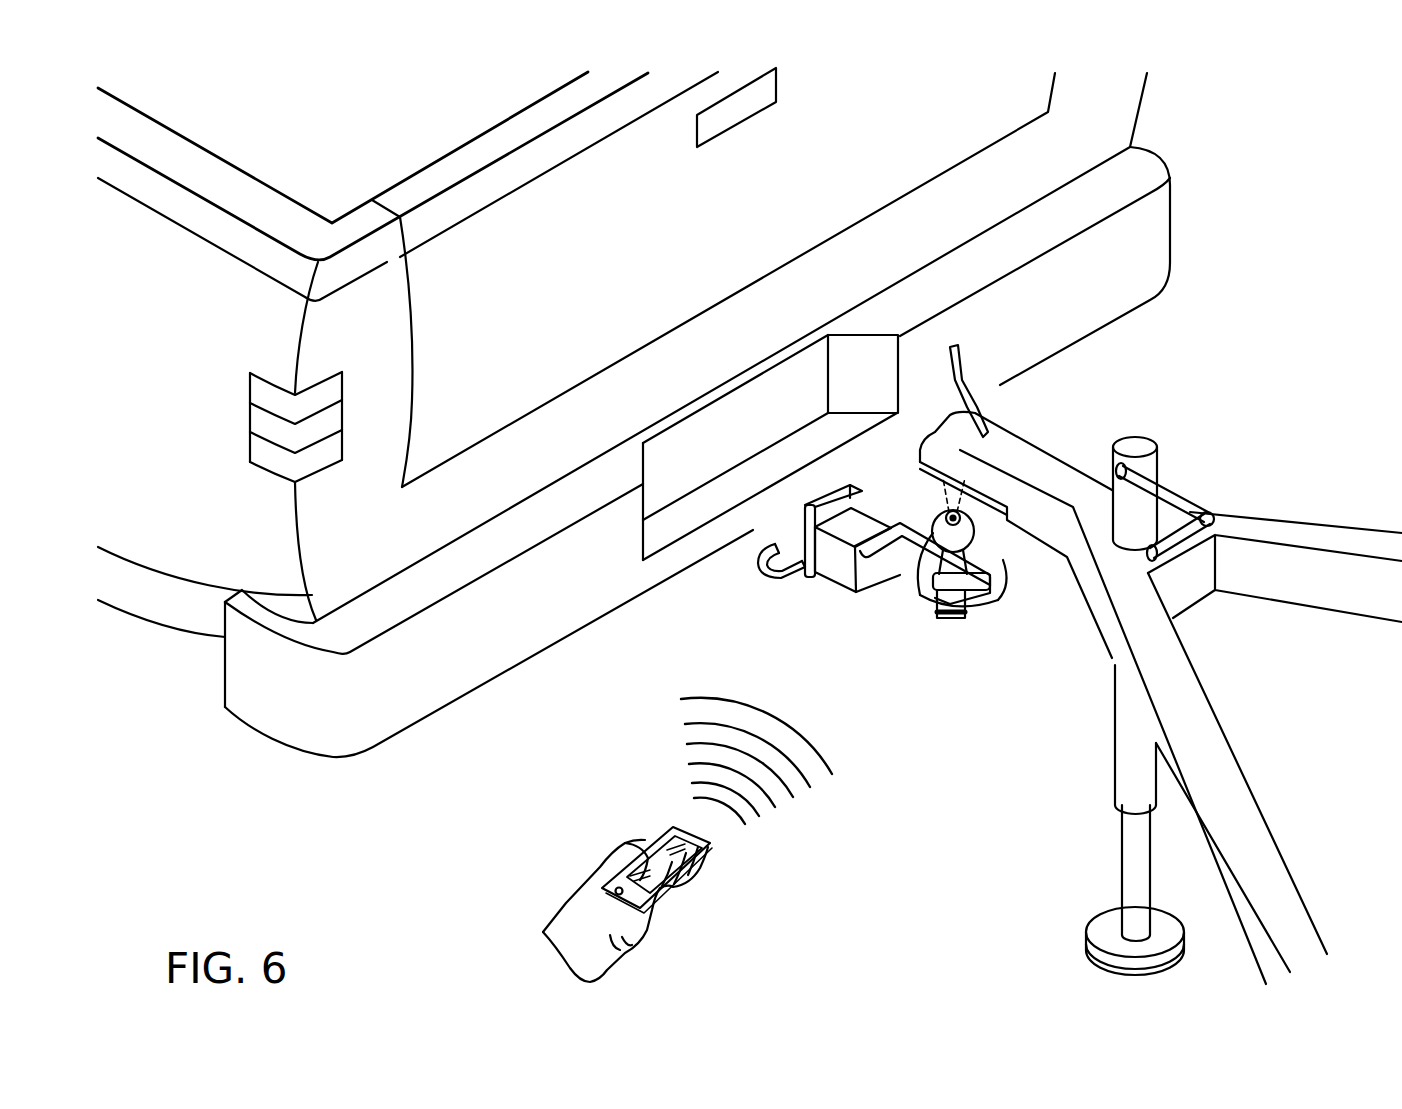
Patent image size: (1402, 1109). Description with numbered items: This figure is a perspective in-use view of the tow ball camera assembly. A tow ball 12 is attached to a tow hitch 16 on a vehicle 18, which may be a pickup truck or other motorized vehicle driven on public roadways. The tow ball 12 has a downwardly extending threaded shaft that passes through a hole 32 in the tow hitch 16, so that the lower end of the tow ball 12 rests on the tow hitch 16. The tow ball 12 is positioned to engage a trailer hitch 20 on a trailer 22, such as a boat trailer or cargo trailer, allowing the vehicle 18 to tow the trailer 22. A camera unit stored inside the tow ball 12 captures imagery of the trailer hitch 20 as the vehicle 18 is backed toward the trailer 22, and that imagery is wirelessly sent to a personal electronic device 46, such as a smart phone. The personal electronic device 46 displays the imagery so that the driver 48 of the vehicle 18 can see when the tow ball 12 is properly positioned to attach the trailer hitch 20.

The tow ball 12 is at (913, 584).
The tow hitch 16 is at (877, 578).
The vehicle 18 is at (1228, 229).
The trailer hitch 20 is at (1003, 437).
The trailer 22 is at (1286, 478).
The hole 32 is at (1003, 570).
The personal electronic device 46 is at (673, 830).
The driver 48 is at (686, 950).